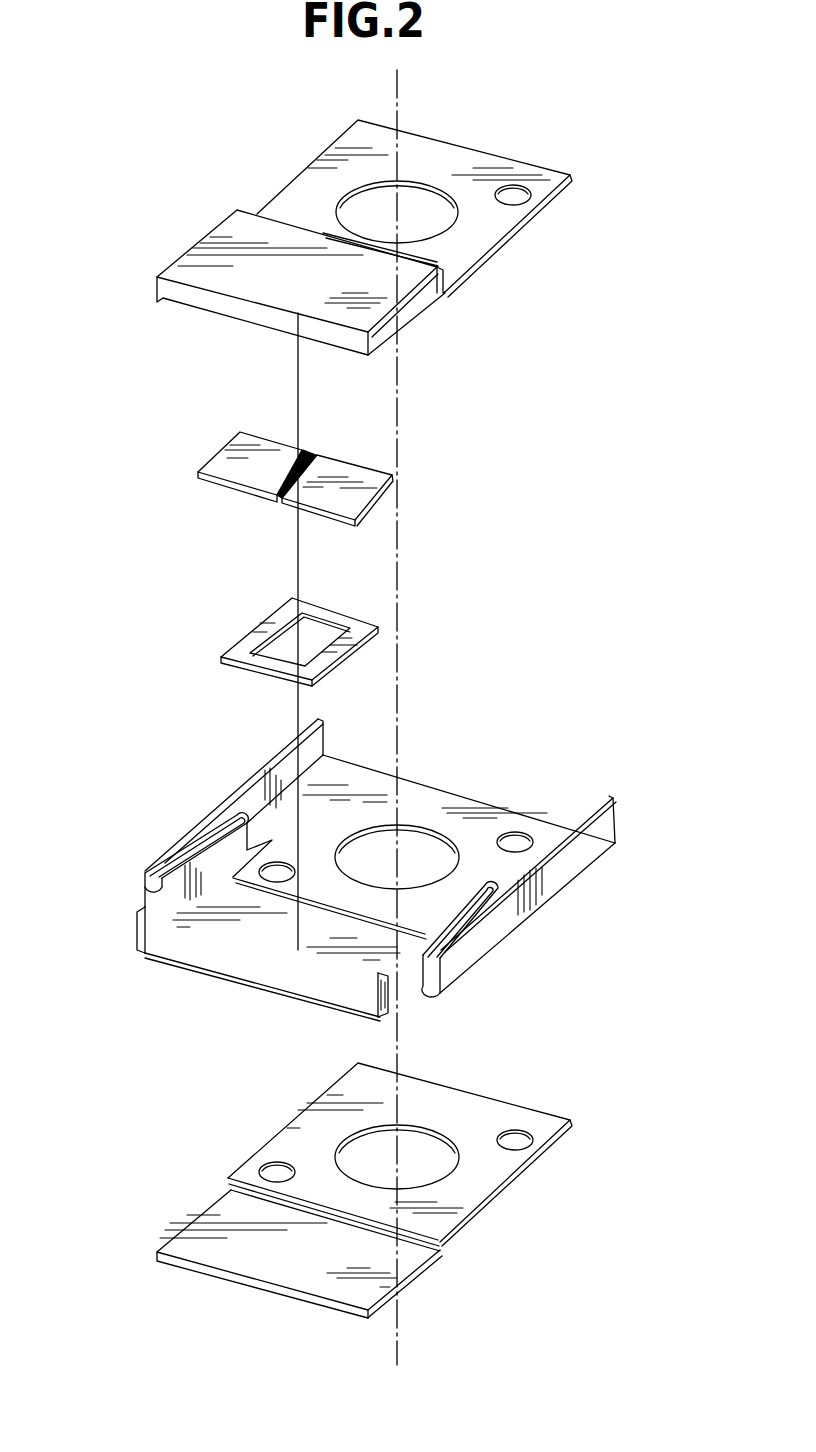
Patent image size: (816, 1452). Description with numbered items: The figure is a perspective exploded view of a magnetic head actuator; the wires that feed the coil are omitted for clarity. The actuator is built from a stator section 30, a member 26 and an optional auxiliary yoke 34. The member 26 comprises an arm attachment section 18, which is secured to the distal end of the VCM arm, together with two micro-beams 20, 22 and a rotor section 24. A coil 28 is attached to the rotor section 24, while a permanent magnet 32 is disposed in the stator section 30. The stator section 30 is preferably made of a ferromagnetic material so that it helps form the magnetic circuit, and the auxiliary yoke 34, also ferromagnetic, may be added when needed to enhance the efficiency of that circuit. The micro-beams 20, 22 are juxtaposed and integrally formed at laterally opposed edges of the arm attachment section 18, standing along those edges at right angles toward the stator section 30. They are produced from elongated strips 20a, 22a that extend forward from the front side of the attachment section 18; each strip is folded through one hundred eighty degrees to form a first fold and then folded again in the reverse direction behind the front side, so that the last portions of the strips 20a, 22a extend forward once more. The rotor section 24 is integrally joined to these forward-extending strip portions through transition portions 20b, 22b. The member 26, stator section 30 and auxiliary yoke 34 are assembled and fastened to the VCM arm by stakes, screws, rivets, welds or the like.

The arm attachment section 18 is at (430, 806).
The micro-beam 20 is at (439, 933).
The elongated strip 20a is at (490, 930).
The transition portion 20b is at (375, 992).
The micro-beam 22 is at (180, 876).
The elongated strip 22a is at (187, 837).
The transition portion 22b is at (165, 920).
The rotor section 24 is at (247, 945).
The member 26 is at (328, 878).
The coil 28 is at (245, 635).
The stator section 30 is at (290, 199).
The permanent magnet 32 is at (218, 460).
The auxiliary yoke 34 is at (467, 1192).